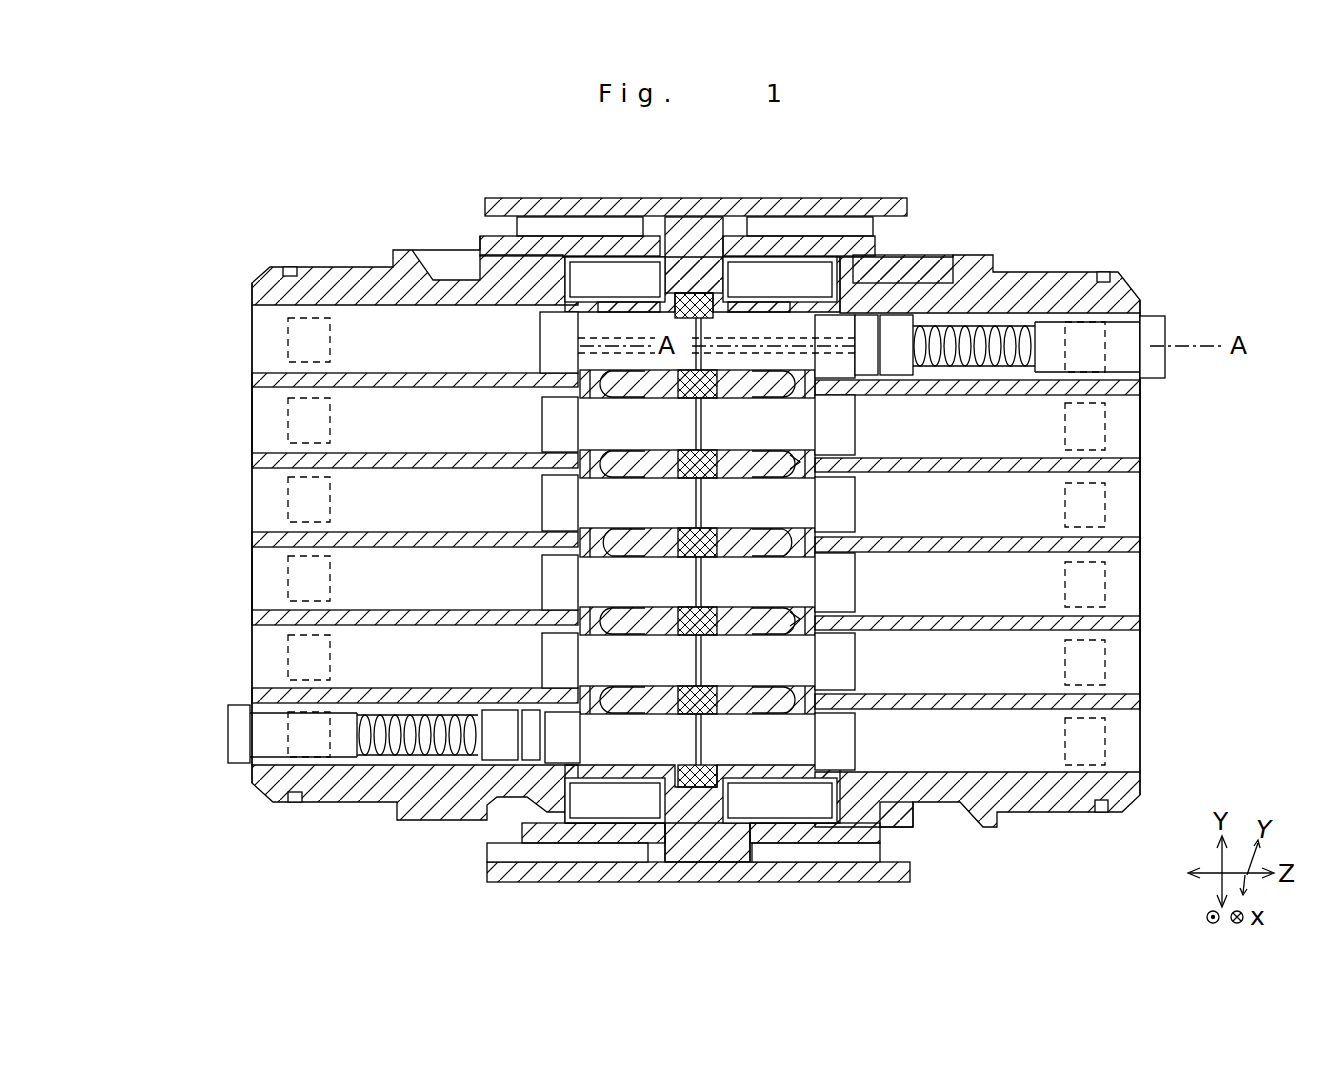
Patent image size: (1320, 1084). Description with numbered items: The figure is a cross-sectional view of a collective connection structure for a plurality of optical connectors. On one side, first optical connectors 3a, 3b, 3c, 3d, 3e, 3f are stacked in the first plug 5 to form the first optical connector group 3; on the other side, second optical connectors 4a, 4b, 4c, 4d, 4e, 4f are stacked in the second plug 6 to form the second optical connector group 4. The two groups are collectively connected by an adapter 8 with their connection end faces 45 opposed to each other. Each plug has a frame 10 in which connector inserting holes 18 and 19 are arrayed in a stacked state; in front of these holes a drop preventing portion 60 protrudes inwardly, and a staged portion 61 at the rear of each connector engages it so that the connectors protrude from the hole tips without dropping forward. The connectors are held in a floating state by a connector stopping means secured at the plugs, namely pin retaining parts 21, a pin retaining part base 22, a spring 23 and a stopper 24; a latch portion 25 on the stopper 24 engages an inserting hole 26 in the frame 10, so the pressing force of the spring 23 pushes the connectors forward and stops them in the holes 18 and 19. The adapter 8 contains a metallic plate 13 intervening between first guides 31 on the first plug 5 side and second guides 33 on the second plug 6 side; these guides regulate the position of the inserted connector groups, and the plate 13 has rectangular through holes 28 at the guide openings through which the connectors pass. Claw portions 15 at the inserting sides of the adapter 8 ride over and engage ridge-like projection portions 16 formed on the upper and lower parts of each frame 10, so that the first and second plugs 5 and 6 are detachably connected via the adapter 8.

The first optical connector group 3 is at (768, 775).
The first optical connector 3a is at (855, 378).
The first optical connector 3b is at (840, 442).
The first optical connector 3c is at (840, 519).
The first optical connector 3d is at (840, 579).
The first optical connector 3e is at (840, 682).
The first optical connector 3f is at (840, 747).
The second optical connector group 4 is at (612, 770).
The second optical connector 4a is at (544, 343).
The second optical connector 4b is at (544, 437).
The second optical connector 4c is at (544, 505).
The second optical connector 4d is at (544, 577).
The second optical connector 4e is at (544, 675).
The second optical connector 4f is at (563, 762).
The first plug 5 is at (1112, 278).
The second plug 6 is at (263, 282).
The adapter 8 is at (730, 197).
The frame 10 is at (347, 267).
The metallic plate 13 is at (696, 292).
The claw portion 15 is at (575, 296).
The projection portion 16 is at (530, 232).
The connector inserting hole 18 is at (1145, 316).
The connector inserting hole 19 is at (256, 416).
The pin retaining part 21 is at (867, 320).
The pin retaining part base 22 is at (897, 320).
The spring 23 is at (990, 330).
The stopper 24 is at (236, 756).
The latch portion 25 is at (1128, 378).
The inserting hole 26 is at (290, 340).
The through hole 28 is at (640, 262).
The first guide 31 is at (786, 468).
The second guide 33 is at (605, 300).
The connection end face 45 is at (690, 790).
The drop preventing portion 60 is at (598, 296).
The staged portion 61 is at (600, 378).